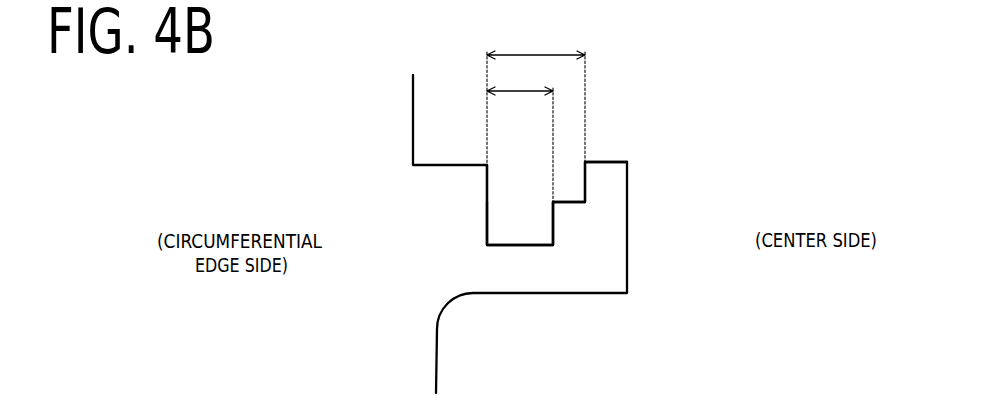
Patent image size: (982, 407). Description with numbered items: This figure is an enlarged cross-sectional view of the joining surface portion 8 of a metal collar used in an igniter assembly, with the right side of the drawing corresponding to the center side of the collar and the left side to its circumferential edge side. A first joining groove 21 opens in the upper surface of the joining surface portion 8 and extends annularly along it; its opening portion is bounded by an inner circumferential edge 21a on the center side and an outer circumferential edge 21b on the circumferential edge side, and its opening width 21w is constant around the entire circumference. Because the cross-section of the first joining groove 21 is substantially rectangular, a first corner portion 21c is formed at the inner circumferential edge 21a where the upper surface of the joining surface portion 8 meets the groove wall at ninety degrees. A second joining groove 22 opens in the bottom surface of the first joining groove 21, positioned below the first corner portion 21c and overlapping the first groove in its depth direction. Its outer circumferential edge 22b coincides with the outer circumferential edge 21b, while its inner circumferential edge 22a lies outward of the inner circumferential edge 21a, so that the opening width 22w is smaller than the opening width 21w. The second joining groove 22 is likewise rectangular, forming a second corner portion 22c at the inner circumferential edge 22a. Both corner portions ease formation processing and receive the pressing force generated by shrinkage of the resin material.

The joining surface portion 8 is at (585, 280).
The first joining groove 21 is at (565, 197).
The inner circumferential edge 21a is at (590, 167).
The outer circumferential edge 21b is at (485, 167).
The first corner portion 21c is at (596, 159).
The opening width 21w is at (536, 100).
The second joining groove 22 is at (520, 245).
The inner circumferential edge 22a is at (552, 205).
The outer circumferential edge 22b is at (487, 200).
The second corner portion 22c is at (568, 213).
The opening width 22w is at (520, 136).